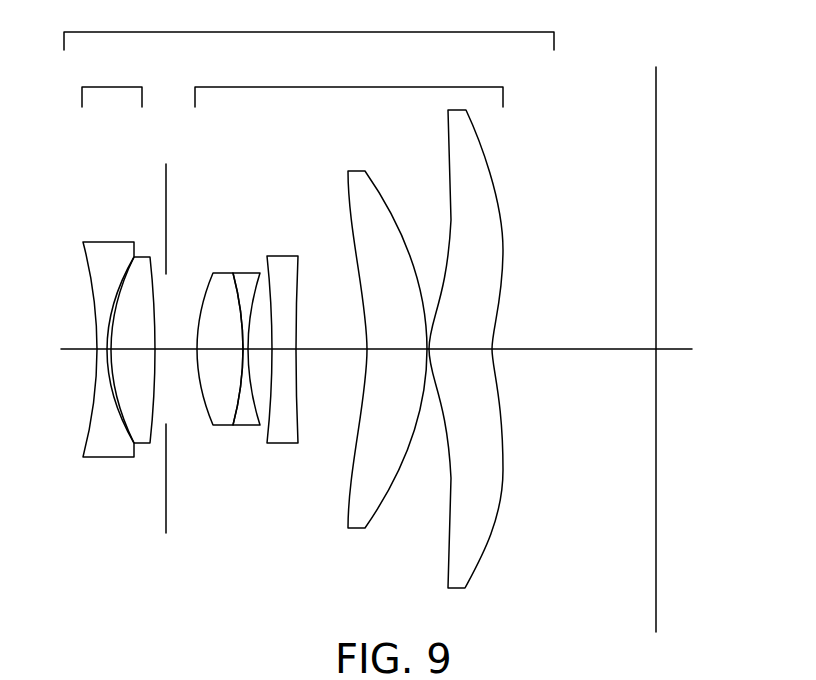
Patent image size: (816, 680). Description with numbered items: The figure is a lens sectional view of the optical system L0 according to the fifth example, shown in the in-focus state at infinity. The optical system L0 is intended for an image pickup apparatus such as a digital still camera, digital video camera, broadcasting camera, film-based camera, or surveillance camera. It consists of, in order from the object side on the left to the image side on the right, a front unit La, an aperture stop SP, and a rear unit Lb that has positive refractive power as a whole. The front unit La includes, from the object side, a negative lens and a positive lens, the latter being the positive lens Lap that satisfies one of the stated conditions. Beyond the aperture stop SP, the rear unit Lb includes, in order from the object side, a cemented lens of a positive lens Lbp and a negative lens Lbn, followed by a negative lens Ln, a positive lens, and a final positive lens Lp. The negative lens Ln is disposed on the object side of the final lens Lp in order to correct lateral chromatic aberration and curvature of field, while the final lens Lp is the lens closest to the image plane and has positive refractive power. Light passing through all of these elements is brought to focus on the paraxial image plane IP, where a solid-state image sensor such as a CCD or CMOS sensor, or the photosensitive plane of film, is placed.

The optical system L0 is at (309, 25).
The front unit La is at (112, 257).
The rear unit Lb is at (349, 293).
The positive lens Lap is at (140, 443).
The aperture stop SP is at (166, 185).
The positive lens Lbp is at (219, 426).
The negative lens Lbn is at (245, 426).
The negative lens Ln is at (293, 443).
The final lens Lp is at (448, 573).
The image plane IP is at (656, 85).